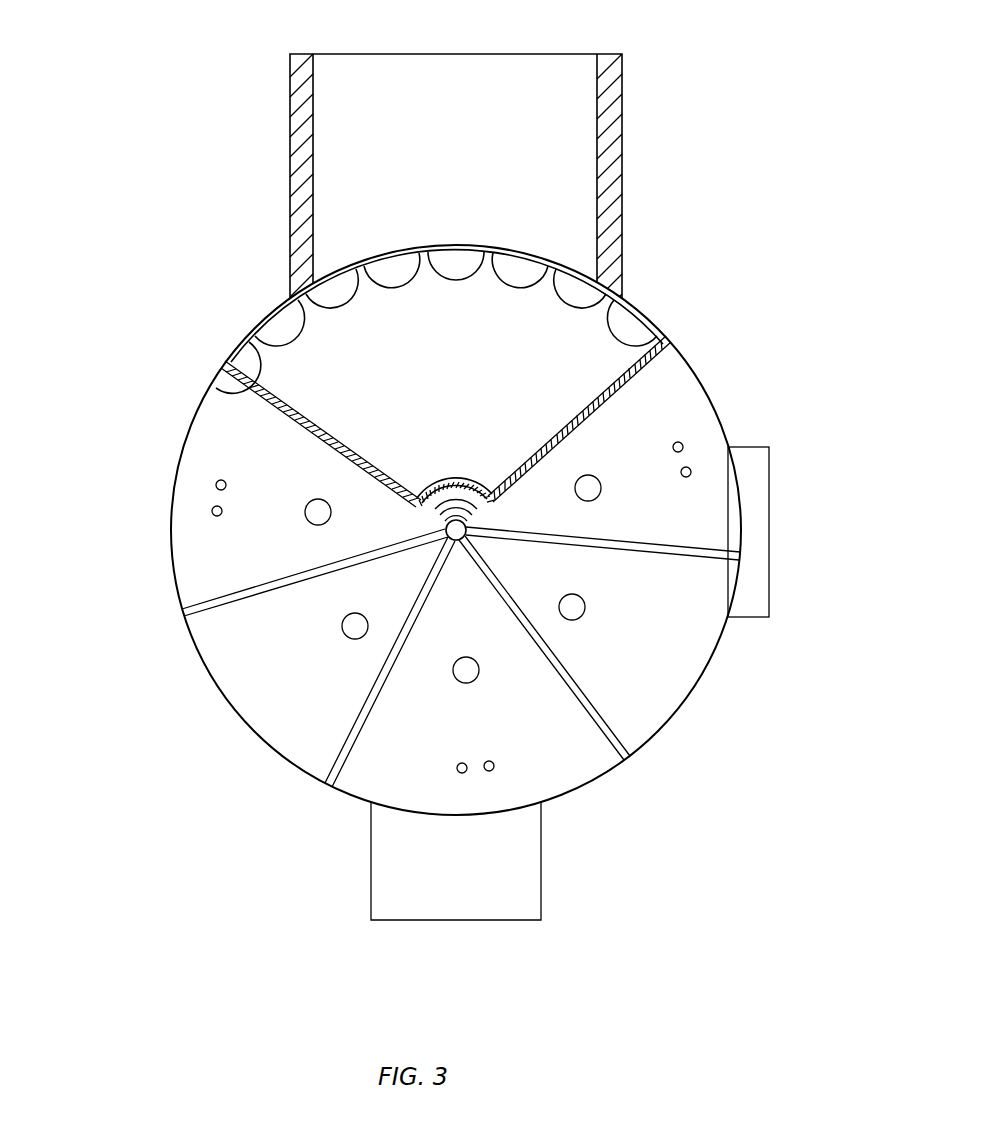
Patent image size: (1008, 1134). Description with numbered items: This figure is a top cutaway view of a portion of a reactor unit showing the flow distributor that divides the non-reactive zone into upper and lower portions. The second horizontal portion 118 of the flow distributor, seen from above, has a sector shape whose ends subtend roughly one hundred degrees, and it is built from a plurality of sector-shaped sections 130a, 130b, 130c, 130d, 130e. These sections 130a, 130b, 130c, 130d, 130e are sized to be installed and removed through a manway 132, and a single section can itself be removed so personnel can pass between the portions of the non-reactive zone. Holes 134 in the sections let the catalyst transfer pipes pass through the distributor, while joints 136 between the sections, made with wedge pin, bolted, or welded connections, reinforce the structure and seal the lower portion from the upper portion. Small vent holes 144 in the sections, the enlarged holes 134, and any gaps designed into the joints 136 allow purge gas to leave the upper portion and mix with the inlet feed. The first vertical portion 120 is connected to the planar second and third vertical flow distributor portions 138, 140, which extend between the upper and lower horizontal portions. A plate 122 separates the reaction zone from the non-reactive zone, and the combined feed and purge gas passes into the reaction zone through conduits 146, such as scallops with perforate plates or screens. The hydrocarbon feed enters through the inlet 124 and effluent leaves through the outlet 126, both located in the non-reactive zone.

The second horizontal portion 118 is at (690, 365).
The first vertical portion 120 is at (455, 478).
The plate 122 is at (262, 342).
The inlet 124 is at (454, 64).
The outlet 126 is at (763, 512).
The section 130a is at (232, 457).
The section 130b is at (268, 713).
The section 130c is at (597, 748).
The section 130d is at (700, 635).
The section 130e is at (692, 423).
The manway 132 is at (472, 913).
The holes 134 is at (307, 519).
The joints 136 is at (237, 605).
The second vertical flow distributor portion 138 is at (237, 370).
The third vertical flow distributor portion 140 is at (588, 388).
The vent holes 144 is at (212, 510).
The conduits 146 is at (338, 292).